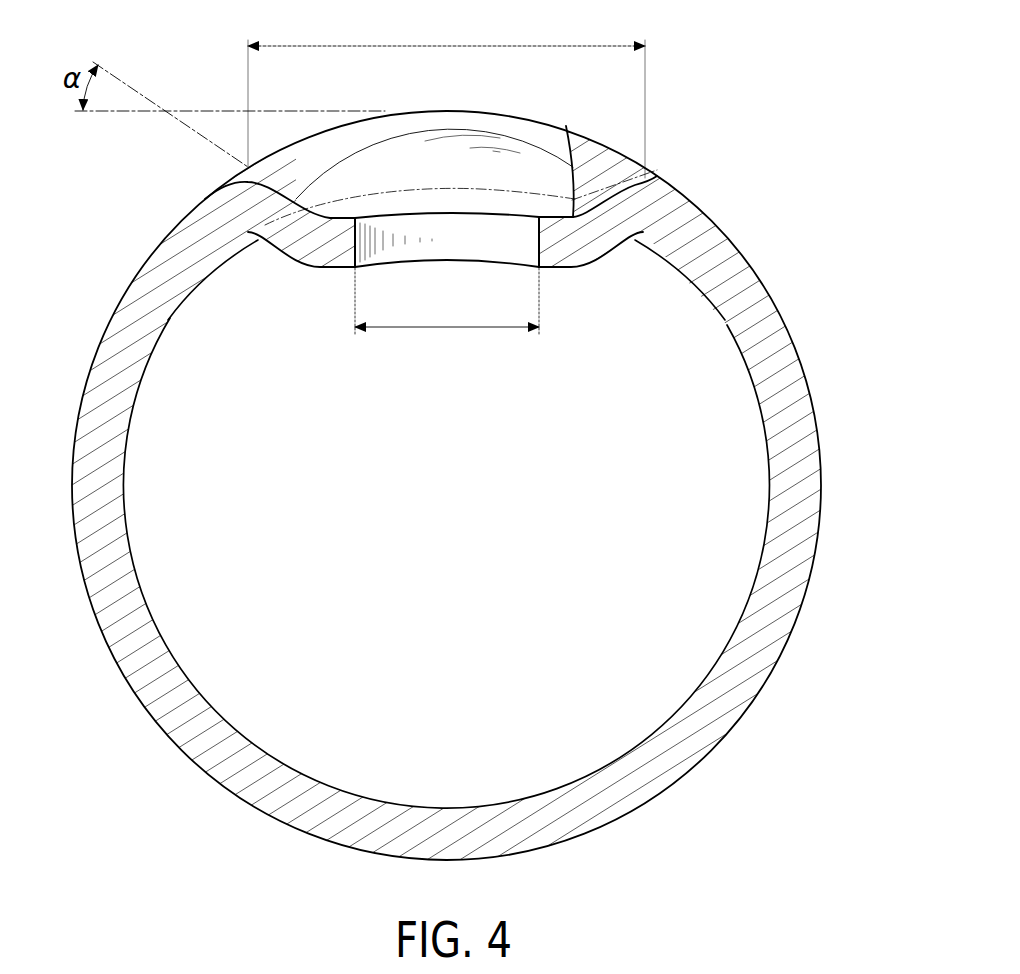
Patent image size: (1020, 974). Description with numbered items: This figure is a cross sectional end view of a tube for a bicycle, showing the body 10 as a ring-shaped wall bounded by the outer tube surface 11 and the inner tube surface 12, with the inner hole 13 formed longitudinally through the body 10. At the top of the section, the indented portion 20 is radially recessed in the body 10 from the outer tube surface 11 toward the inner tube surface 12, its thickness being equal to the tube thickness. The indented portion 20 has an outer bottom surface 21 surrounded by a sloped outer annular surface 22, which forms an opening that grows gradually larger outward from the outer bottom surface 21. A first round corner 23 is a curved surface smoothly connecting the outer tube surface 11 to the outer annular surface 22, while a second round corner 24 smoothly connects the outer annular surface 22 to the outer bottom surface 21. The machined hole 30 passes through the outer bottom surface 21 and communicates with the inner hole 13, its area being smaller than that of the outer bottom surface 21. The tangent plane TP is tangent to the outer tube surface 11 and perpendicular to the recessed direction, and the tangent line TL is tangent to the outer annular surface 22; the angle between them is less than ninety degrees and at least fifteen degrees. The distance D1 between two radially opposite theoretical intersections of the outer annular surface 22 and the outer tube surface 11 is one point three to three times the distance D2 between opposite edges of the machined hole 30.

The body 10 is at (783, 241).
The outer tube surface 11 is at (145, 262).
The inner tube surface 12 is at (200, 273).
The inner hole 13 is at (460, 535).
The indented portion 20 is at (585, 125).
The outer bottom surface 21 is at (355, 217).
The outer annular surface 22 is at (298, 200).
The first round corner 23 is at (653, 178).
The second round corner 24 is at (566, 126).
The machined hole 30 is at (537, 250).
The distance between theoretical intersections D1 is at (446, 96).
The distance between edges of the machined hole D2 is at (447, 302).
The tangent plane TP is at (201, 112).
The tangent line TL is at (203, 140).